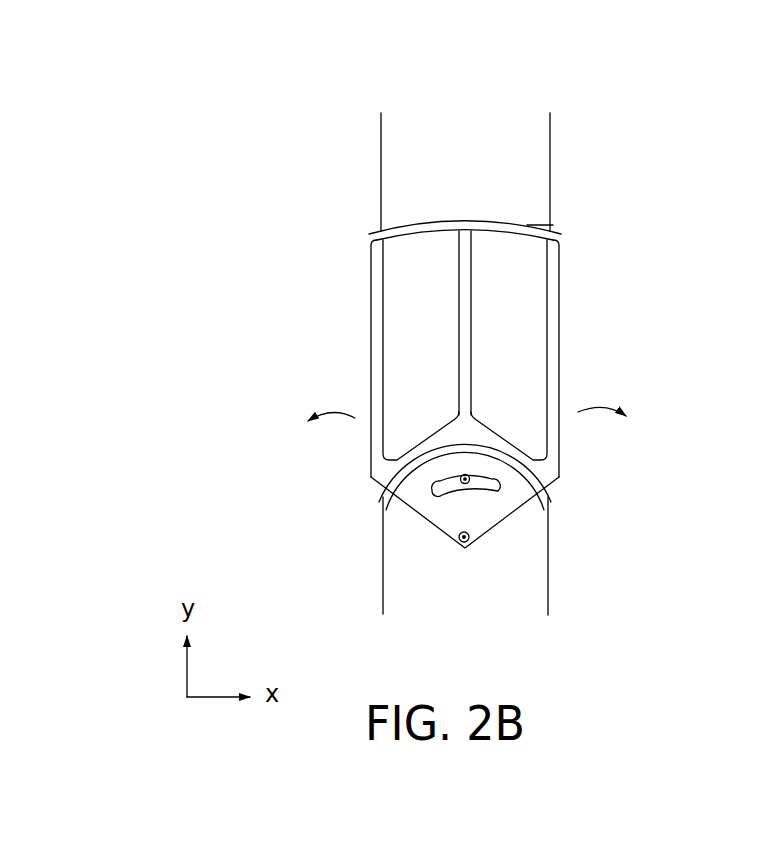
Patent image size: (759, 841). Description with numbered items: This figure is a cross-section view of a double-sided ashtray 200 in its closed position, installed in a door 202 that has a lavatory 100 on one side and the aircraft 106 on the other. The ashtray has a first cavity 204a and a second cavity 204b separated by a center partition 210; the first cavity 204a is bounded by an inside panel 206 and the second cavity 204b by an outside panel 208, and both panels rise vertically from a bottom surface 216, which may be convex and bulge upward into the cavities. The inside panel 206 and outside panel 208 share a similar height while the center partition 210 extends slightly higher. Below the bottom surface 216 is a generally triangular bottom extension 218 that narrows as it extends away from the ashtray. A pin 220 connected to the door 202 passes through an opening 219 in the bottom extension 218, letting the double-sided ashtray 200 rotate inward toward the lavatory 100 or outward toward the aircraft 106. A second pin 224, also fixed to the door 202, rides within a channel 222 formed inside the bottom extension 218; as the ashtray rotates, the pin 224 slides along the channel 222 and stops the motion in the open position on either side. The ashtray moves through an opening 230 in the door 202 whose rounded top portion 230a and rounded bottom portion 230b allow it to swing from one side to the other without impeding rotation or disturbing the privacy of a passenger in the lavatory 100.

The lavatory 100 is at (679, 133).
The aircraft 106 is at (197, 265).
The double-sided ashtray 200 is at (260, 181).
The door 202 is at (497, 140).
The first cavity 204a is at (533, 291).
The second cavity 204b is at (396, 387).
The inside panel 206 is at (555, 350).
The outside panel 208 is at (371, 293).
The center partition 210 is at (461, 292).
The bottom surface 216 is at (382, 478).
The bottom extension 218 is at (520, 493).
The opening 219 is at (461, 556).
The pin 220 is at (459, 545).
The channel 222 is at (432, 488).
The pin 224 is at (470, 478).
The opening 230 is at (433, 224).
The rounded top portion 230a is at (553, 225).
The rounded bottom portion 230b is at (480, 458).